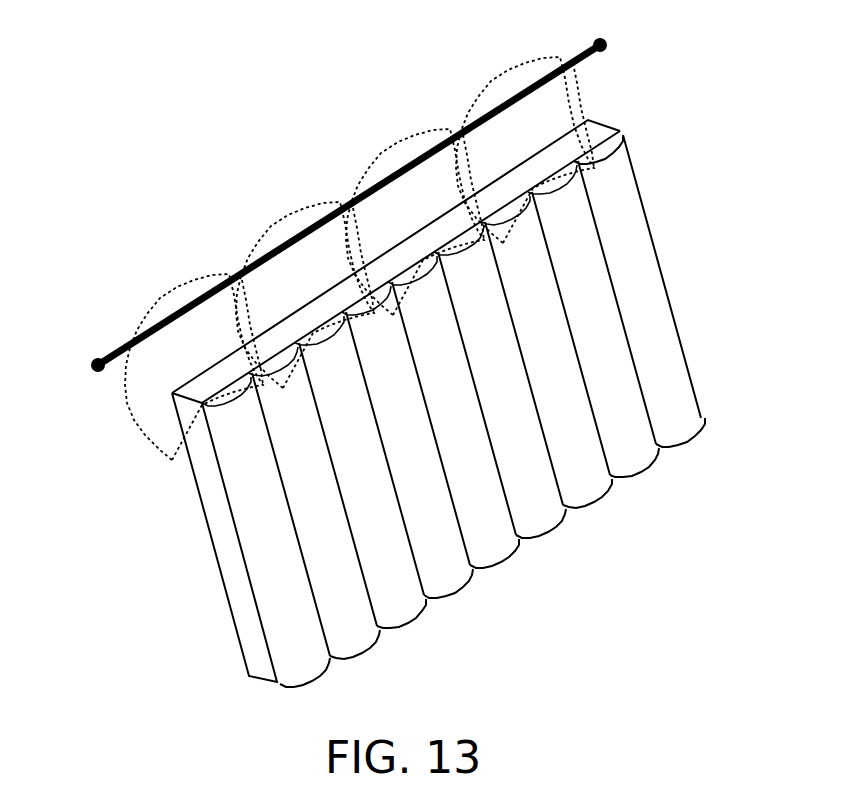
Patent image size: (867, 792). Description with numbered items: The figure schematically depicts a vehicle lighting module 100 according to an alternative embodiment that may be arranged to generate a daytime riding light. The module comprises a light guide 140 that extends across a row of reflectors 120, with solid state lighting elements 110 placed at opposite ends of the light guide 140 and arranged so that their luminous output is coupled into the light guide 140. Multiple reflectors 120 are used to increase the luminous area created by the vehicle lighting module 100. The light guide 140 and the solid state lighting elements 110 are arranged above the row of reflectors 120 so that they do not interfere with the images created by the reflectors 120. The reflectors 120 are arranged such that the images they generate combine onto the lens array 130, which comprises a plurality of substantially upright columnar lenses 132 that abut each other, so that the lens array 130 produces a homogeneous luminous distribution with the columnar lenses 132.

The vehicle lighting module 100 is at (114, 106).
The solid state lighting element 110 is at (606, 45).
The reflector 120 is at (178, 292).
The lens array 130 is at (424, 402).
The columnar lens 132 is at (607, 143).
The light guide 140 is at (290, 238).